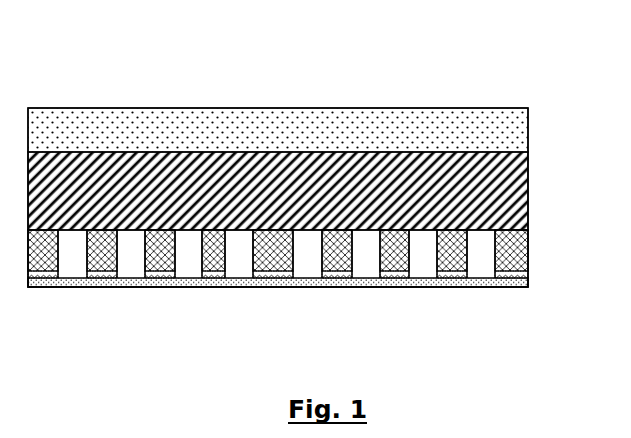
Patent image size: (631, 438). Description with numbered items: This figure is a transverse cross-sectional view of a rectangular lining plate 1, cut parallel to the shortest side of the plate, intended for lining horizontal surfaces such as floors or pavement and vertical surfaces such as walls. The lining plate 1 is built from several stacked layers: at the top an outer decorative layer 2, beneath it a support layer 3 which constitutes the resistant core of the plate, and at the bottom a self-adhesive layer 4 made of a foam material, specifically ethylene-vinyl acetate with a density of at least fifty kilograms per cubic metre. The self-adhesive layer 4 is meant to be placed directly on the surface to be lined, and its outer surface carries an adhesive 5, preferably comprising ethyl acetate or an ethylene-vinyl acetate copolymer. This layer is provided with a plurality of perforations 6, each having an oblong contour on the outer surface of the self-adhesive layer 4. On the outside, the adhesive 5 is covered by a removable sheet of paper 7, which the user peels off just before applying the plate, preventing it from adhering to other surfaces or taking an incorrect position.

The lining plate 1 is at (211, 64).
The outer decorative layer 2 is at (505, 122).
The support layer 3 is at (522, 202).
The self-adhesive layer 4 is at (547, 230).
The adhesive 5 is at (100, 275).
The perforations 6 is at (185, 258).
The removable sheet of paper 7 is at (383, 280).